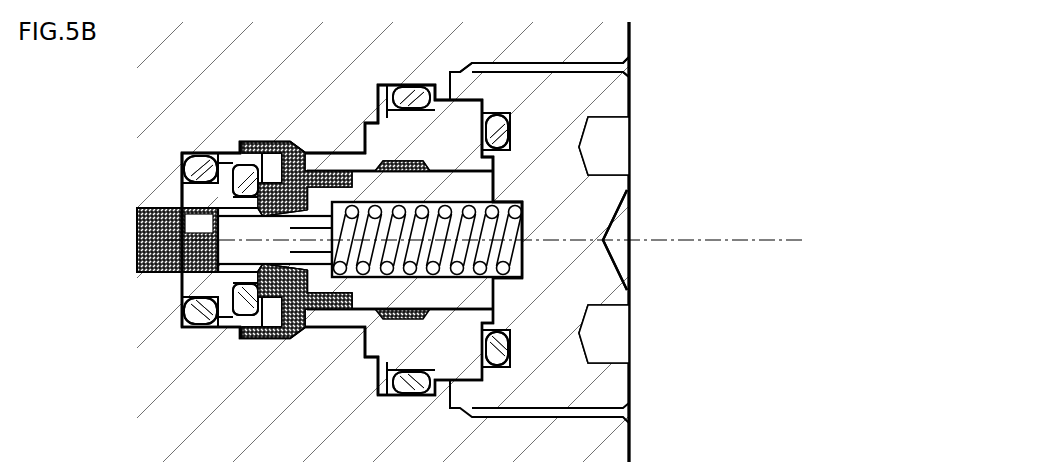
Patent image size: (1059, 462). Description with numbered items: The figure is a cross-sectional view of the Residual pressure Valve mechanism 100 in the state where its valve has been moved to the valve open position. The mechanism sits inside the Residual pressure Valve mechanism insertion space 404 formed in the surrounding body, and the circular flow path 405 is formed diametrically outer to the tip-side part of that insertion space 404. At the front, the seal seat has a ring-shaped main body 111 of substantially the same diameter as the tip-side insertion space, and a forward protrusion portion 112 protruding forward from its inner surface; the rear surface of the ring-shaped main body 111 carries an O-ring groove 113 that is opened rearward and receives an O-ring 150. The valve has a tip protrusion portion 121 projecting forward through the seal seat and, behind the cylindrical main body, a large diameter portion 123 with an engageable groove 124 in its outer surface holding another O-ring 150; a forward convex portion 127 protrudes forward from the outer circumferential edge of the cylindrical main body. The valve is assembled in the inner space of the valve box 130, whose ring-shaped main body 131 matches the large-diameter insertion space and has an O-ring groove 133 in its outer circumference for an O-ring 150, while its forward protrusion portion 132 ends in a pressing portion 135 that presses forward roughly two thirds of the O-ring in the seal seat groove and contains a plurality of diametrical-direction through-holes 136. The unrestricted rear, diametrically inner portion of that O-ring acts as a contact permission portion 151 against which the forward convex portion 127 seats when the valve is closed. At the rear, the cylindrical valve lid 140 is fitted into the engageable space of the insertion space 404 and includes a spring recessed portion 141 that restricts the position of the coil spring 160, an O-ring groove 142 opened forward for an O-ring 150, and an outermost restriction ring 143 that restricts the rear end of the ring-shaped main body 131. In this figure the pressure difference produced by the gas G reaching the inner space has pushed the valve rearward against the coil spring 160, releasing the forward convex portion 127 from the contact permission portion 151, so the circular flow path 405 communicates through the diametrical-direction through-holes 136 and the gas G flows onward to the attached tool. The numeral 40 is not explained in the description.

The housing 40 is at (633, 40).
The Residual pressure Valve mechanism 100 is at (645, 74).
The ring-shaped main body 111 is at (225, 152).
The forward protrusion portion 112 is at (181, 202).
The O-ring groove 113 is at (208, 328).
The tip protrusion portion 121 is at (332, 187).
The large diameter portion 123 is at (368, 297).
The engageable groove 124 is at (436, 172).
The forward convex portion 127 is at (292, 318).
The valve box 130 is at (379, 402).
The ring-shaped main body 131 is at (374, 360).
The forward protrusion portion 132 is at (318, 318).
The O-ring groove 133 is at (388, 100).
The pressing portion 135 is at (243, 303).
The diametrical-direction through-holes 136 is at (299, 152).
The valve lid 140 is at (633, 378).
The spring recessed portion 141 is at (512, 282).
The O-ring groove 142 is at (505, 123).
The restriction ring 143 is at (454, 76).
The O-ring 150 is at (498, 127).
The contact permission portion 151 is at (250, 174).
The coil spring 160 is at (630, 187).
The Residual pressure Valve mechanism insertion space 404 is at (259, 234).
The circular flow path 405 is at (253, 338).
The gas G is at (157, 265).